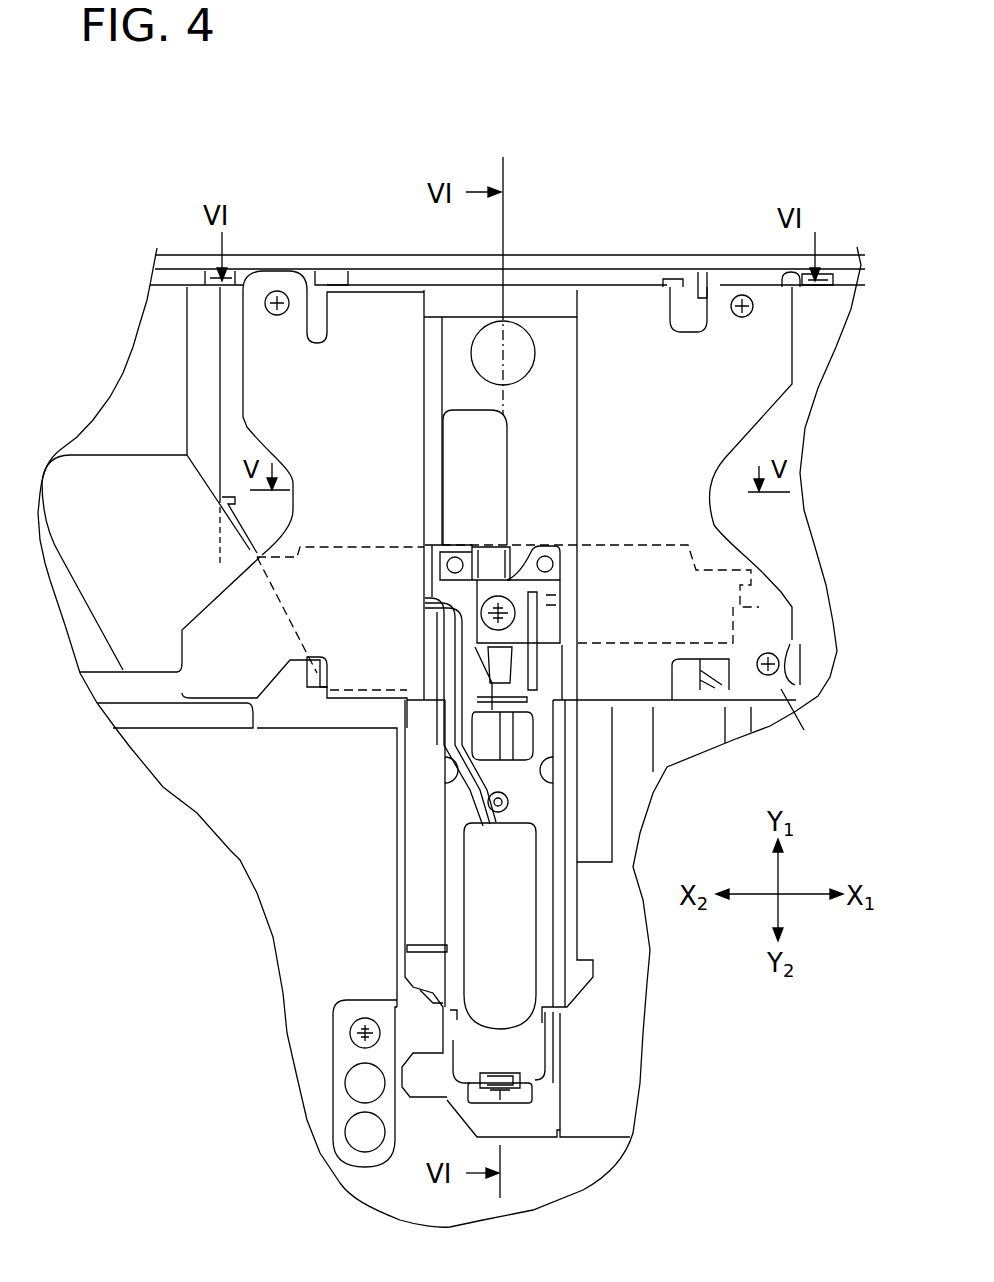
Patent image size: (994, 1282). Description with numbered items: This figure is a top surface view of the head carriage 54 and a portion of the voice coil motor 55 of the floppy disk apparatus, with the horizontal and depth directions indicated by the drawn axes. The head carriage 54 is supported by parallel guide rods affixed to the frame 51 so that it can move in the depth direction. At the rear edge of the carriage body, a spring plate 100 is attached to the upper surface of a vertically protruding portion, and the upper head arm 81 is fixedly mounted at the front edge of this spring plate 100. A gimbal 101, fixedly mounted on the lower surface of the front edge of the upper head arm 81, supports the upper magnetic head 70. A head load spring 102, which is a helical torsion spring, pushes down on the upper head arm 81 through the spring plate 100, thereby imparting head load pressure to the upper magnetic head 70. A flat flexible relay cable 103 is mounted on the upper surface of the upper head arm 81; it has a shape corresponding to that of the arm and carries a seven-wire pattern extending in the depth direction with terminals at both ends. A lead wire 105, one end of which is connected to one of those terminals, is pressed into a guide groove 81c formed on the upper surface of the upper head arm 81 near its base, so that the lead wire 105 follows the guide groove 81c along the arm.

The frame 51 is at (817, 272).
The head carriage 54 is at (444, 857).
The voice coil motor 55 is at (377, 282).
The upper magnetic head 70 is at (513, 1100).
The upper head arm 81 is at (455, 808).
The guide groove 81c is at (453, 697).
The spring plate 100 is at (550, 623).
The gimbal 101 is at (530, 545).
The head load spring 102 is at (485, 545).
The flat flexible relay cable 103 is at (517, 918).
The lead wire 105 is at (453, 727).